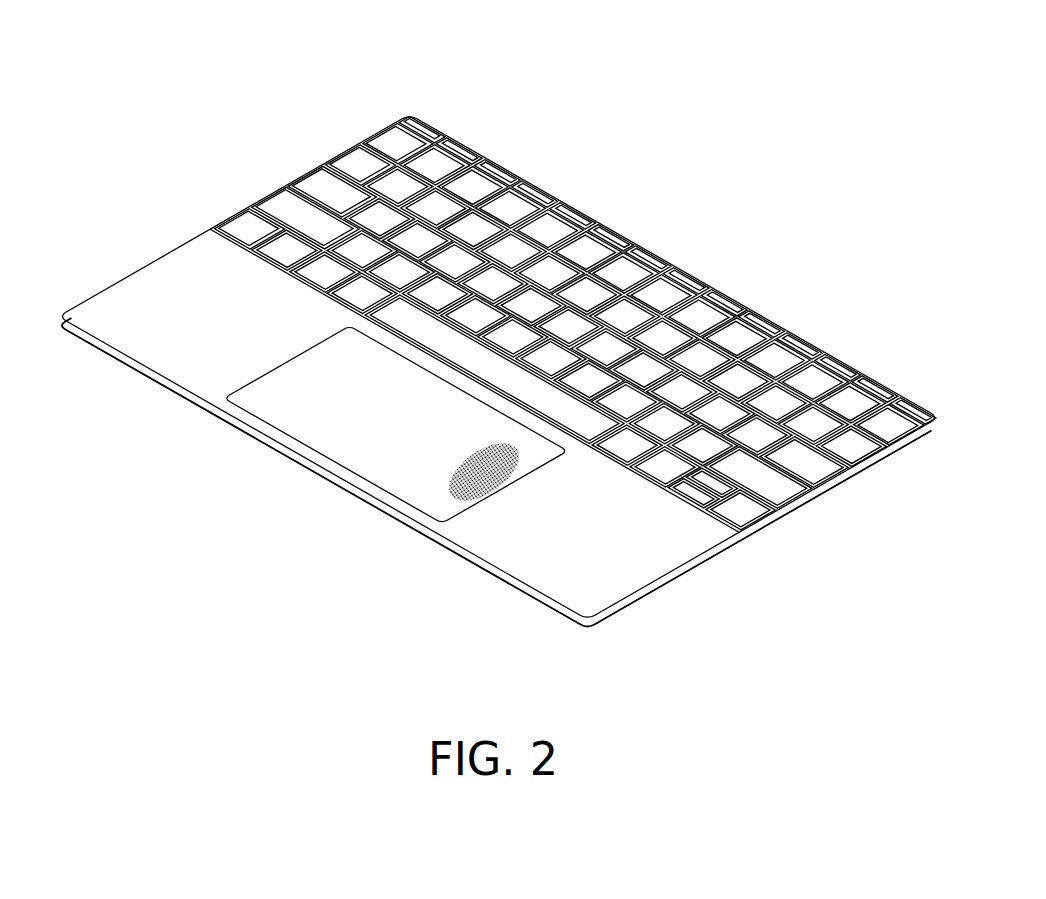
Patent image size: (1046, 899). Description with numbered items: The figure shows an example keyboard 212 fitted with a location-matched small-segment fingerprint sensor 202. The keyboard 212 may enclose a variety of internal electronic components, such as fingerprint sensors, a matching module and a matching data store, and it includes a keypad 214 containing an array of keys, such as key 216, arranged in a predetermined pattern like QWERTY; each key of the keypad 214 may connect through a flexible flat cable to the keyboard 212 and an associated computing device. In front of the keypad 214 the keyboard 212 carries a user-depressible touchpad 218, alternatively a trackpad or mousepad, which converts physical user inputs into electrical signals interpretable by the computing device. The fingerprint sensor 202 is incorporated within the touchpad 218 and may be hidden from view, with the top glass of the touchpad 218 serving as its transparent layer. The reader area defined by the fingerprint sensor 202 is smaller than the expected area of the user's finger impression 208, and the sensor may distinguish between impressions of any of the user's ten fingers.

The keyboard 212 is at (313, 83).
The keypad 214 is at (613, 337).
The key 216 is at (742, 515).
The touchpad 218 is at (410, 436).
The fingerprint sensor 202 is at (490, 480).
The finger impression 208 is at (468, 485).